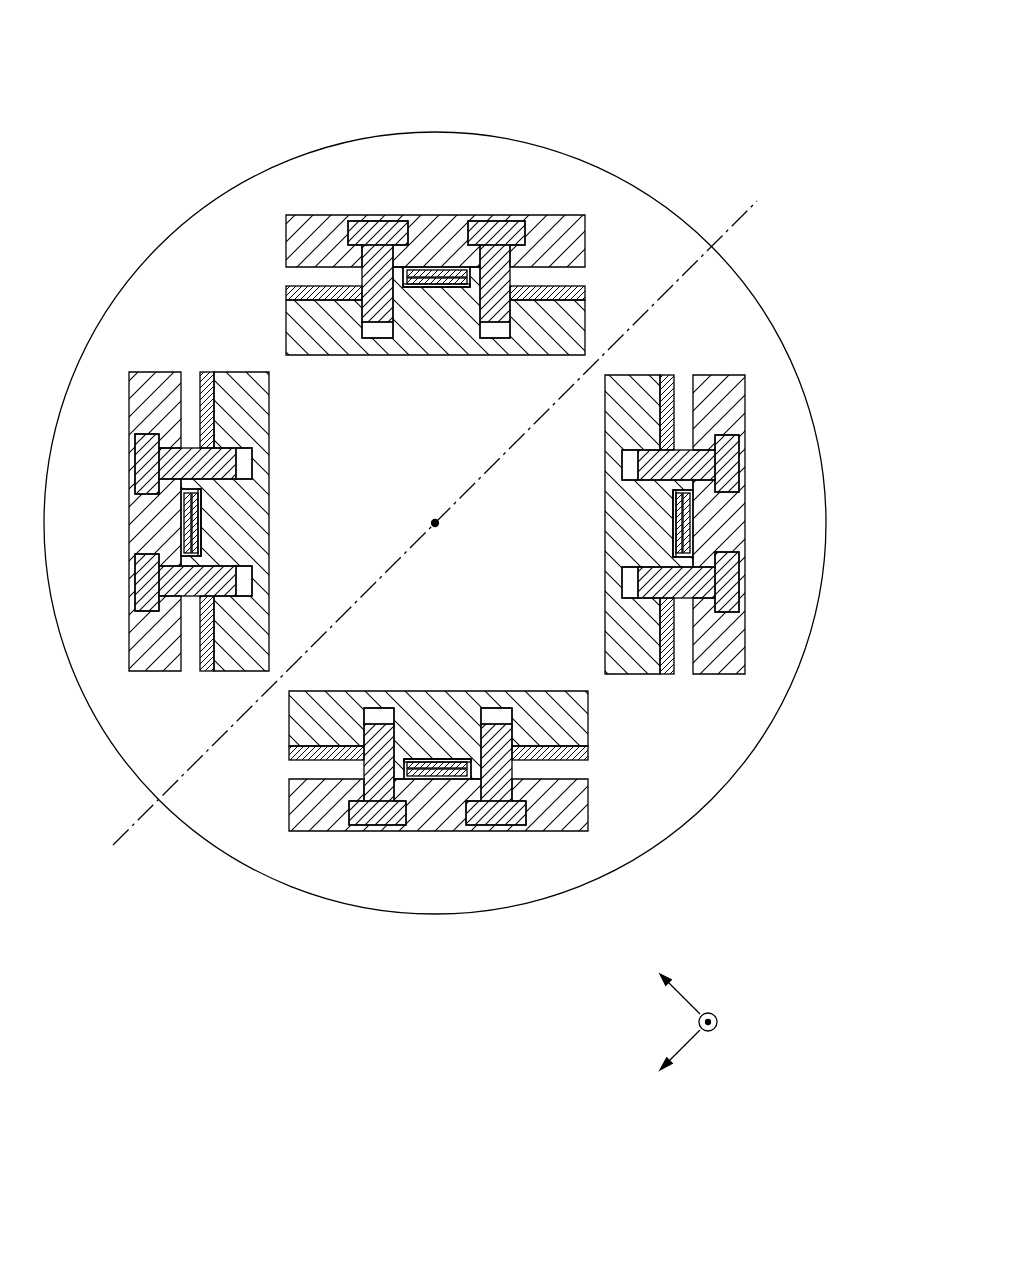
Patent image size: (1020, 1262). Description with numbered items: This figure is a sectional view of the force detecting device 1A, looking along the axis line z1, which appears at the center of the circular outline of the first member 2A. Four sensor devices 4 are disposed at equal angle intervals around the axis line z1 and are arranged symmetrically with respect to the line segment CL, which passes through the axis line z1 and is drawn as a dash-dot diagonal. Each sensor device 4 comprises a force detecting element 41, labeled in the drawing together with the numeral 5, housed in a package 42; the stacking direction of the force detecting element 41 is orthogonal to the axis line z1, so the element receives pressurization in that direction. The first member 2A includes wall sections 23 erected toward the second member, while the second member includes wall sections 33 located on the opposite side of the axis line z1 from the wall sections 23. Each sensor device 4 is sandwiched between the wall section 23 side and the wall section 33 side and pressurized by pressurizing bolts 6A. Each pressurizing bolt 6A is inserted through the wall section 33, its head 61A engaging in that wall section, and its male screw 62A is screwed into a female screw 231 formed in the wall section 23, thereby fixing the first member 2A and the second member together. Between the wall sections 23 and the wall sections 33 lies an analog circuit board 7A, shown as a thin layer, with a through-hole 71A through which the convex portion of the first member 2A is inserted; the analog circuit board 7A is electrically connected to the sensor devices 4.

The force detecting device 1A is at (606, 92).
The first member 2A is at (218, 222).
The sensor device 4 is at (435, 527).
The force detecting element 41 is at (454, 524).
The piezoelectric element 5 is at (428, 280).
The package 42 is at (455, 272).
The pressurizing bolt 6A is at (429, 527).
The head 61A is at (510, 238).
The male screw 62A is at (505, 330).
The analog circuit board 7A is at (300, 292).
The through-hole 71A is at (437, 300).
The wall section 23 is at (300, 332).
The female screw 231 is at (372, 345).
The wall section 33 is at (318, 228).
The line segment CL is at (690, 248).
The axis line z1 is at (411, 491).